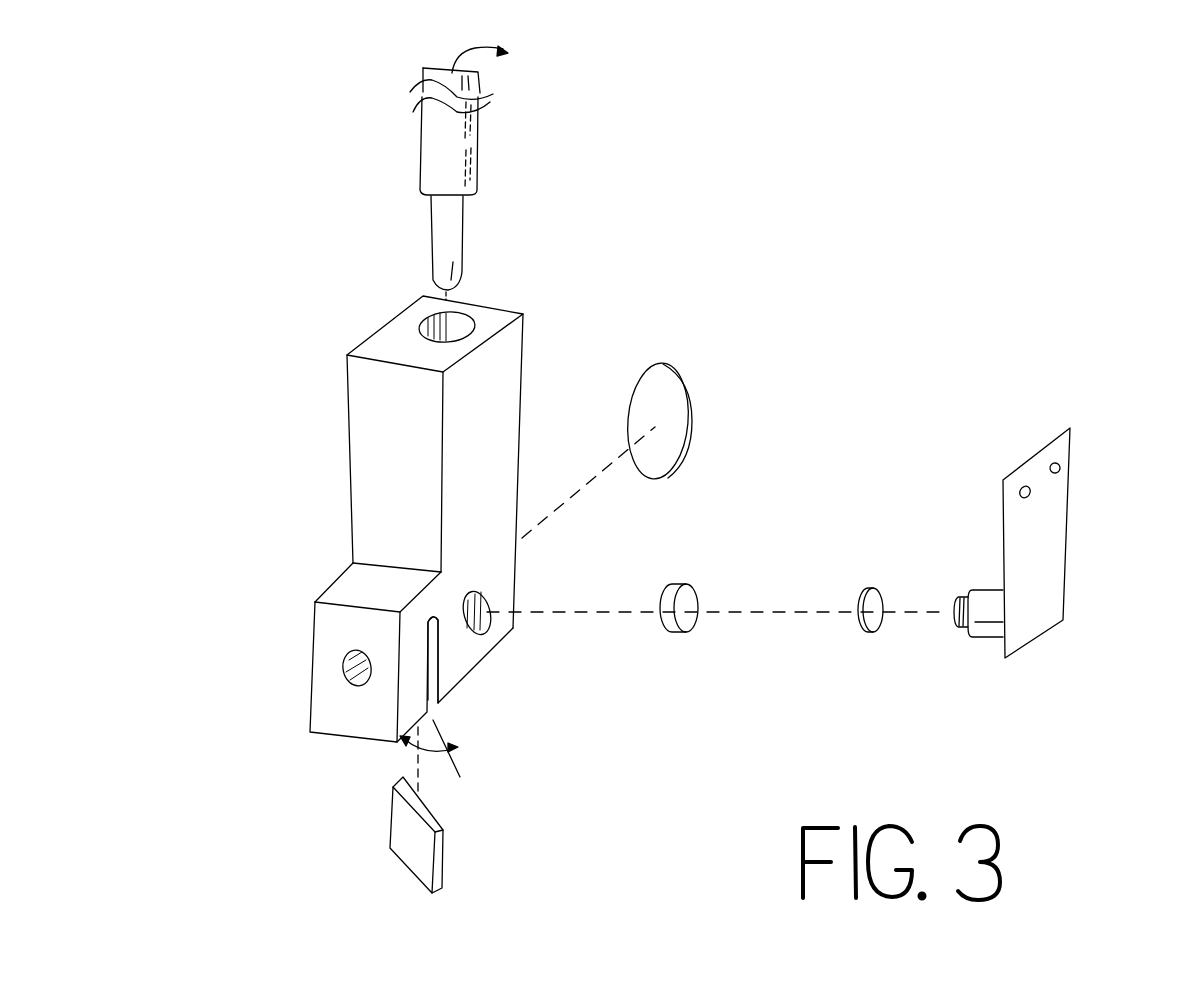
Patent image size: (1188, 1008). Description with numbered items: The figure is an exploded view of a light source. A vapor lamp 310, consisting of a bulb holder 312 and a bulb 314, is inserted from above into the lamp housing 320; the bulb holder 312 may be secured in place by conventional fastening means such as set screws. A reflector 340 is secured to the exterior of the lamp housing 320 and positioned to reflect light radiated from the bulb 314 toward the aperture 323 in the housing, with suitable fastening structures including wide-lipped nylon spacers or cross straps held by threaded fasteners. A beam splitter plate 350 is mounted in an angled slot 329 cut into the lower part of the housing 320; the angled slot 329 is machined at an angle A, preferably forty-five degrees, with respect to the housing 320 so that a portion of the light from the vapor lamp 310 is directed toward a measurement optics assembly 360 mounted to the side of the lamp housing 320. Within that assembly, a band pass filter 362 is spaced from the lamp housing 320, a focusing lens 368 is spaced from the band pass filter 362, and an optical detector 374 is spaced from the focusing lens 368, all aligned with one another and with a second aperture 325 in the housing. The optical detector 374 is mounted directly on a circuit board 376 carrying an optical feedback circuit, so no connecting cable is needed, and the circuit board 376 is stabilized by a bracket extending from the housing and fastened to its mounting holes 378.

The vapor lamp 310 is at (393, 198).
The bulb holder 312 is at (481, 130).
The bulb 314 is at (463, 227).
The lamp housing 320 is at (347, 374).
The aperture 323 is at (347, 683).
The aperture 325 is at (487, 622).
The angled slot 329 is at (440, 688).
The reflector 340 is at (682, 468).
The beam splitter plate 350 is at (392, 818).
The measurement optics assembly 360 is at (820, 567).
The band pass filter 362 is at (673, 633).
The focusing lens 368 is at (868, 635).
The optical detector 374 is at (980, 637).
The circuit board 376 is at (1070, 550).
The mounting holes 378 is at (1024, 484).
The angle A is at (458, 745).